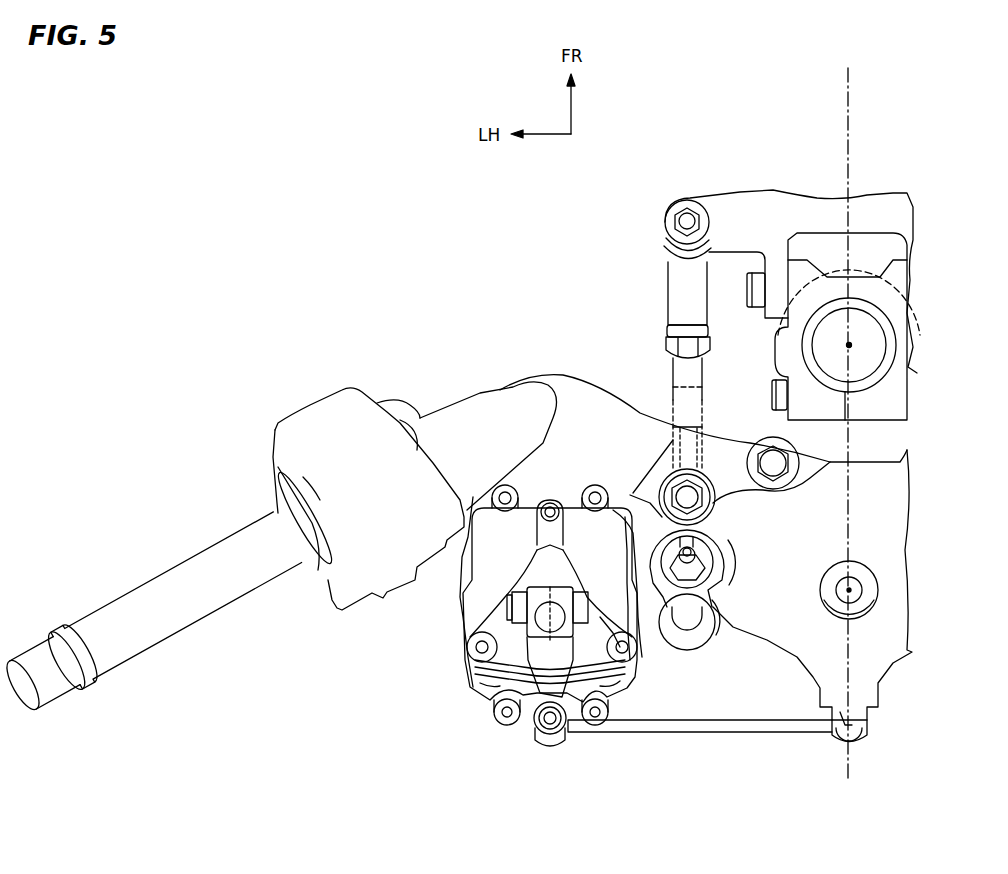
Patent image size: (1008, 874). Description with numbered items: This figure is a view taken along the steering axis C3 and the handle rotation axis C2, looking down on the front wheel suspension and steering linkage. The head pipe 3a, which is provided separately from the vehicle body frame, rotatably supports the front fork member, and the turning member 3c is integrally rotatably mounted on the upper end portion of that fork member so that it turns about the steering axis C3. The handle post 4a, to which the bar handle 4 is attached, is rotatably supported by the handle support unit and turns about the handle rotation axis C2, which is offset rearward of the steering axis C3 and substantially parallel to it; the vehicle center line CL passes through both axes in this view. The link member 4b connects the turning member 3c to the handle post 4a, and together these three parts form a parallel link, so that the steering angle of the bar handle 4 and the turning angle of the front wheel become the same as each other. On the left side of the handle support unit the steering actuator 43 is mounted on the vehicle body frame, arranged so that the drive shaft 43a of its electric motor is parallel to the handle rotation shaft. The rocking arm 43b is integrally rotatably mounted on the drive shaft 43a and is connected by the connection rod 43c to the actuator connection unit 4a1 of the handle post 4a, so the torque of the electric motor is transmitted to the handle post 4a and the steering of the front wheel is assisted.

The bar handle 4 is at (163, 578).
The handle post 4a is at (807, 508).
The actuator connection unit 4a1 is at (838, 735).
The link member 4b is at (667, 313).
The head pipe 3a is at (786, 346).
The turning member 3c is at (738, 198).
The steering actuator 43 is at (450, 629).
The drive shaft 43a is at (550, 618).
The rocking arm 43b is at (543, 698).
The connection rod 43c is at (706, 733).
The handle rotation axis C2 is at (843, 590).
The steering axis C3 is at (848, 345).
The center line CL is at (848, 84).